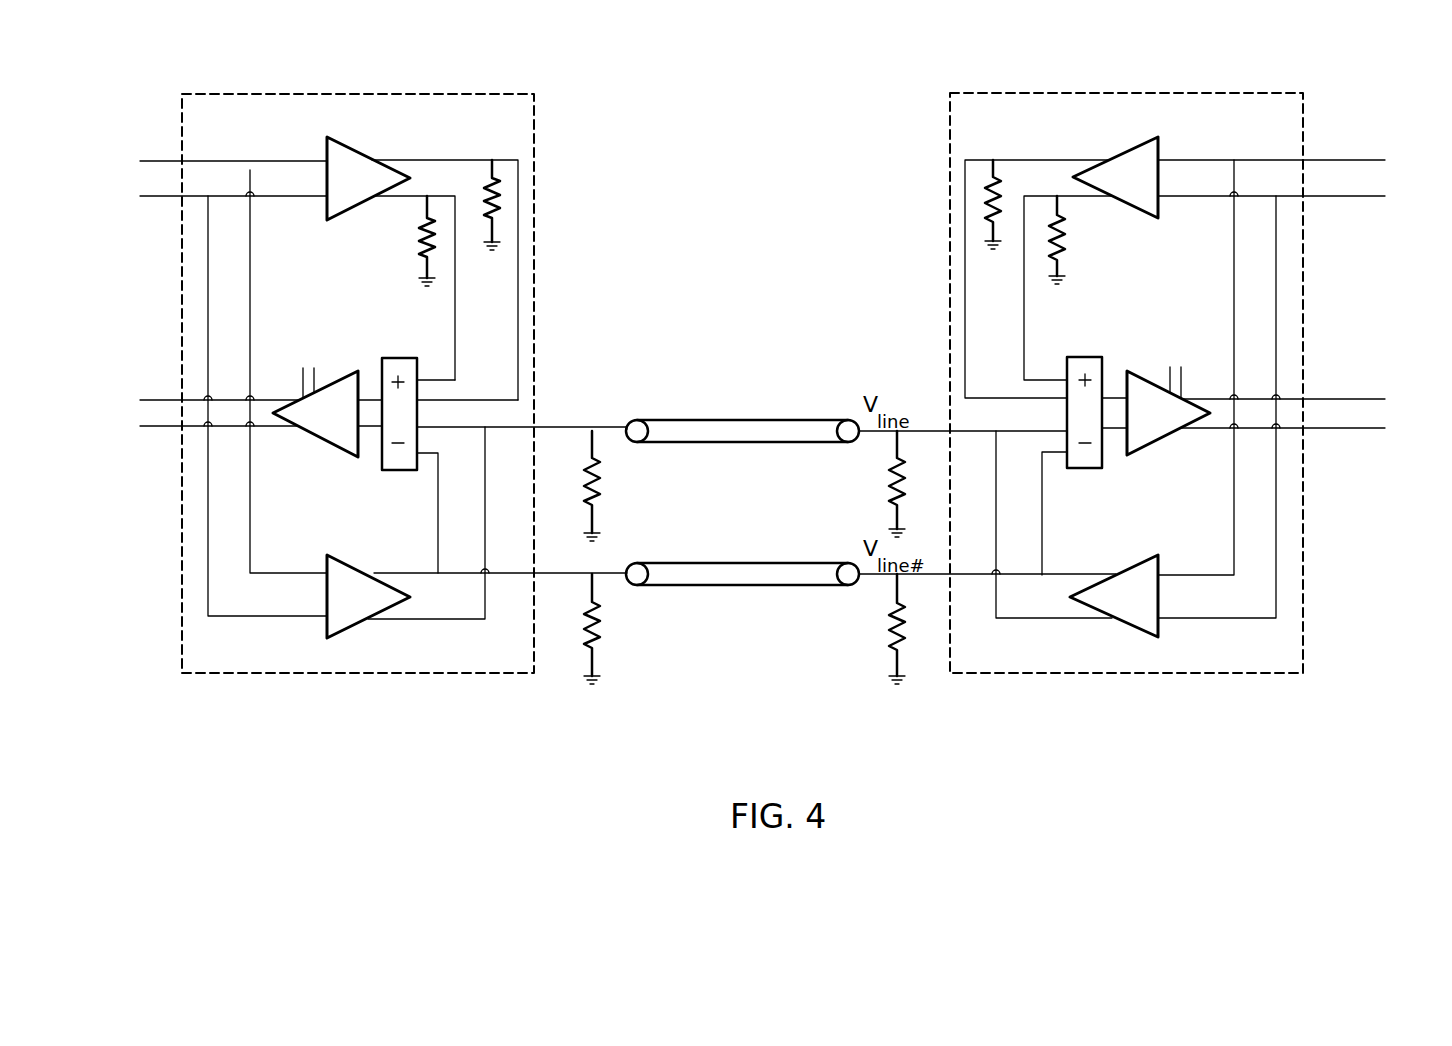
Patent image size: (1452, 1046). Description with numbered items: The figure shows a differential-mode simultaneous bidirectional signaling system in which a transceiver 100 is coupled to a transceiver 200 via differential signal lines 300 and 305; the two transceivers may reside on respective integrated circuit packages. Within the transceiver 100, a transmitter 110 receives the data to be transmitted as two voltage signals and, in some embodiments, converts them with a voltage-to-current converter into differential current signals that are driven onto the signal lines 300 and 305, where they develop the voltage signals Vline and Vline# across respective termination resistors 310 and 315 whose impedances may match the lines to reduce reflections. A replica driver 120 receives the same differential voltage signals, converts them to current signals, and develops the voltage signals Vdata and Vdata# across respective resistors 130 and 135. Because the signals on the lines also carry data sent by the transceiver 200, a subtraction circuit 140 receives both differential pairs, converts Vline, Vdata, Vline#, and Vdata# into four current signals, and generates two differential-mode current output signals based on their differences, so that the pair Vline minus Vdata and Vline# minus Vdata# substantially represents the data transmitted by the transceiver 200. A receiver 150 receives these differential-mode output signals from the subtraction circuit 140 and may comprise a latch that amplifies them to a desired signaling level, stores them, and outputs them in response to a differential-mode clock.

The transceiver 100 is at (1142, 93).
The transmitter 110 is at (1135, 558).
The replica driver 120 is at (1137, 138).
The resistor 130 is at (1017, 204).
The resistor 135 is at (1082, 240).
The subtraction circuit 140 is at (1082, 357).
The receiver 150 is at (1160, 442).
The transceiver 200 is at (342, 93).
The differential signal line 300 is at (745, 420).
The differential signal line 305 is at (745, 563).
The termination resistor 310 is at (872, 484).
The termination resistor 315 is at (872, 629).